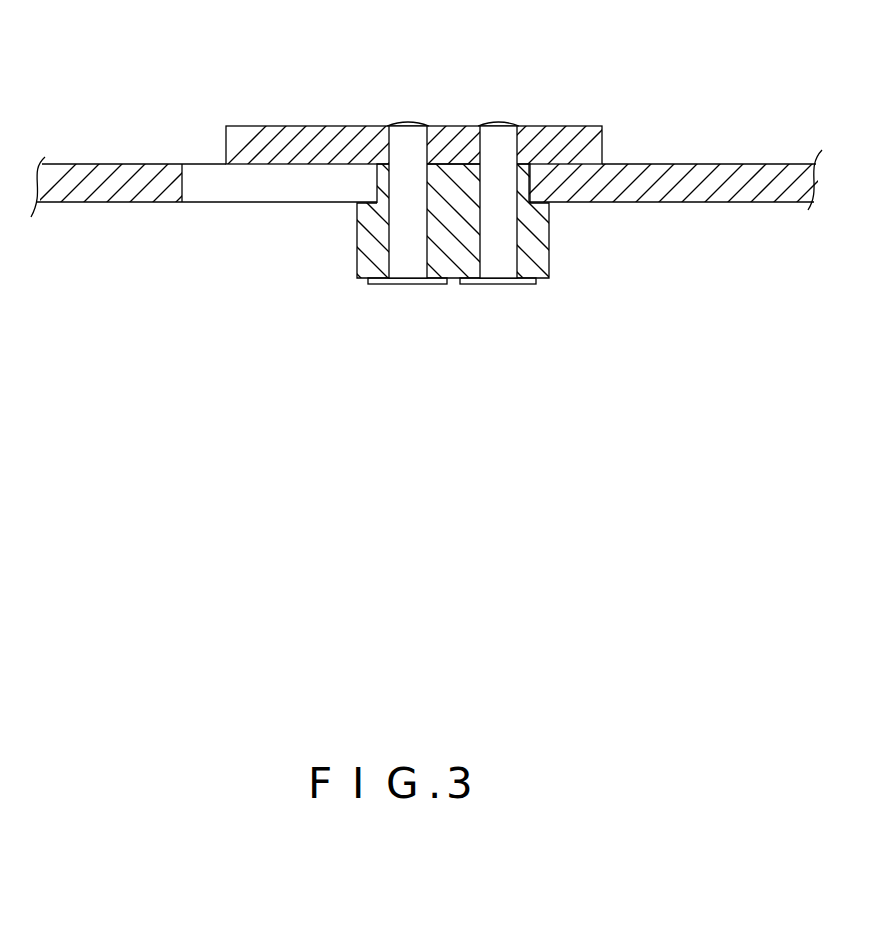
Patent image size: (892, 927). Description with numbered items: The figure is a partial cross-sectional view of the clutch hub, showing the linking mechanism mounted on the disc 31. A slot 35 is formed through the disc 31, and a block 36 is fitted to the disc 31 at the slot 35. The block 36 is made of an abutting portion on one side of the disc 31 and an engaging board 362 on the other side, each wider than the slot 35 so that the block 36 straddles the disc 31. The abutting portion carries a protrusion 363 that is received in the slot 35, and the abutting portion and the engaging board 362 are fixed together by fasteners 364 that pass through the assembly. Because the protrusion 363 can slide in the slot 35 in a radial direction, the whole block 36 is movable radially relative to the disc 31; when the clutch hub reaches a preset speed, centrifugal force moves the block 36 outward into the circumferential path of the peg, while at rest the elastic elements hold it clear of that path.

The disc 31 is at (117, 176).
The slot 35 is at (248, 183).
The block 36 is at (378, 252).
The engaging board 362 is at (303, 142).
The protrusion 363 is at (384, 183).
The fasteners 364 is at (493, 146).